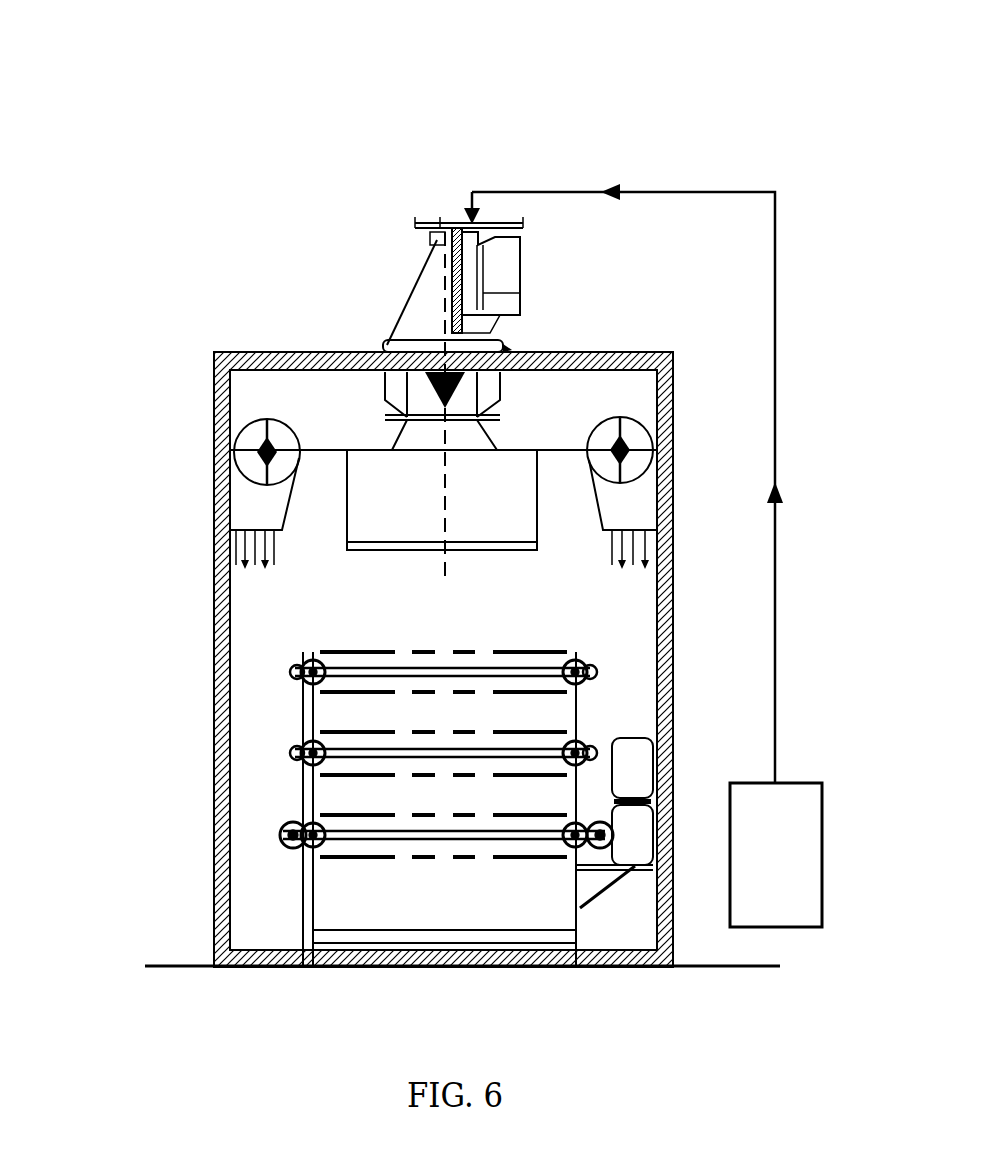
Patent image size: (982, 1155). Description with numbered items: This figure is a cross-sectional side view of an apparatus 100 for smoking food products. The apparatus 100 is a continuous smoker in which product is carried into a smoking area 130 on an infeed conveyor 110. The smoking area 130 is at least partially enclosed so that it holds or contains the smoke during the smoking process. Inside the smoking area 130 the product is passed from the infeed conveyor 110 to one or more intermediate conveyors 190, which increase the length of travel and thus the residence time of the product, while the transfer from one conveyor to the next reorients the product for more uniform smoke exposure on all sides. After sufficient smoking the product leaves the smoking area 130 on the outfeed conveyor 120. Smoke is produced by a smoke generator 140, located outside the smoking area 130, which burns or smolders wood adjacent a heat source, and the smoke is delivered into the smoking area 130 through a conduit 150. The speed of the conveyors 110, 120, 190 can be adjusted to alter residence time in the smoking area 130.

The apparatus 100 is at (285, 165).
The infeed conveyor 110 is at (372, 636).
The outfeed conveyor 120 is at (345, 868).
The smoking area 130 is at (192, 697).
The smoke generator 140 is at (822, 837).
The conduit 150 is at (775, 560).
The intermediate conveyor 190 is at (535, 726).